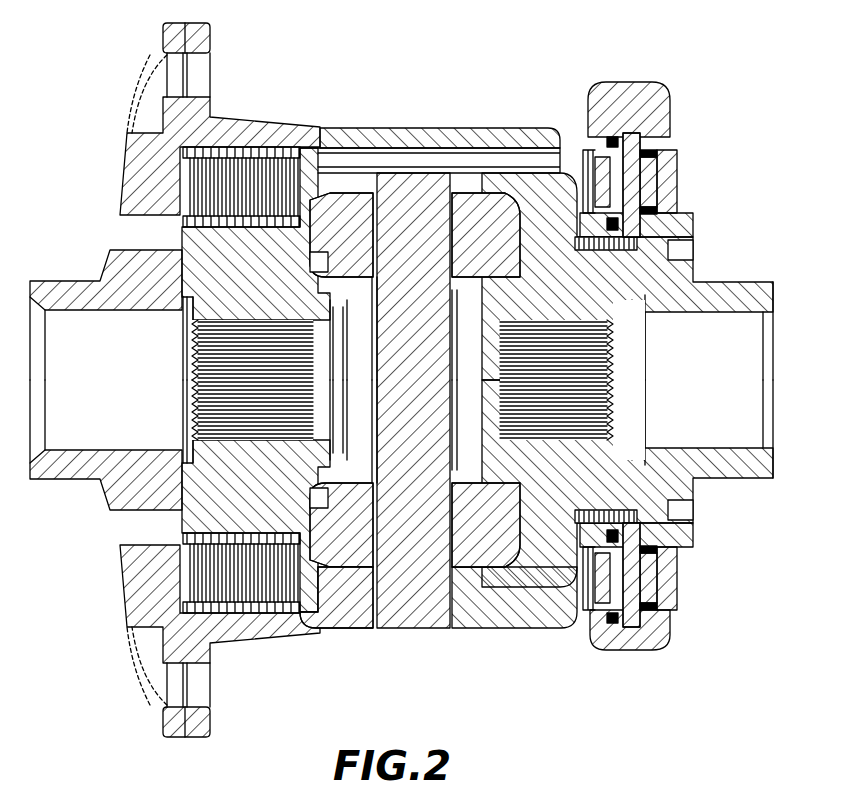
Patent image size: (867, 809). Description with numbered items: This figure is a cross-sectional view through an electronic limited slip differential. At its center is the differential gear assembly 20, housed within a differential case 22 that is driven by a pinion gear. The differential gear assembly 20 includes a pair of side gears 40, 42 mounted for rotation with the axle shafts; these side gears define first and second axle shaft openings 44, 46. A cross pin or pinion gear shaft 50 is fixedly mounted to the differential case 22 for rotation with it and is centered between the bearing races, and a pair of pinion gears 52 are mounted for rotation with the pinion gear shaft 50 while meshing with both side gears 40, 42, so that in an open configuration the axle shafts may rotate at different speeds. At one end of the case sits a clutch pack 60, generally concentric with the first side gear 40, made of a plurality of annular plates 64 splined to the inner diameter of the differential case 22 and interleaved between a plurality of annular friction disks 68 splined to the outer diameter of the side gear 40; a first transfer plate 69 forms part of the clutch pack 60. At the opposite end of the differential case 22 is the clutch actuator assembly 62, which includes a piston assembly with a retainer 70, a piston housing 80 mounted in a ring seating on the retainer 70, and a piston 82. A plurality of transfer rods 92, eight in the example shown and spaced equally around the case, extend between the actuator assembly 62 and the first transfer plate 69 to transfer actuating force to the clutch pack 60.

The differential gear assembly 20 is at (332, 130).
The differential case 22 is at (343, 128).
The side gear 40 is at (180, 514).
The side gear 42 is at (517, 507).
The first axle shaft opening 44 is at (252, 440).
The second axle shaft opening 46 is at (578, 440).
The pinion gear shaft 50 is at (400, 200).
The pinion gears 52 is at (473, 218).
The clutch pack 60 is at (243, 380).
The clutch actuator assembly 62 is at (655, 370).
The annular plates 64 is at (219, 598).
The annular friction disks 68 is at (266, 612).
The first transfer plate 69 is at (305, 600).
The retainer 70 is at (672, 173).
The piston housing 80 is at (606, 96).
The piston 82 is at (624, 150).
The transfer rods 92 is at (574, 172).